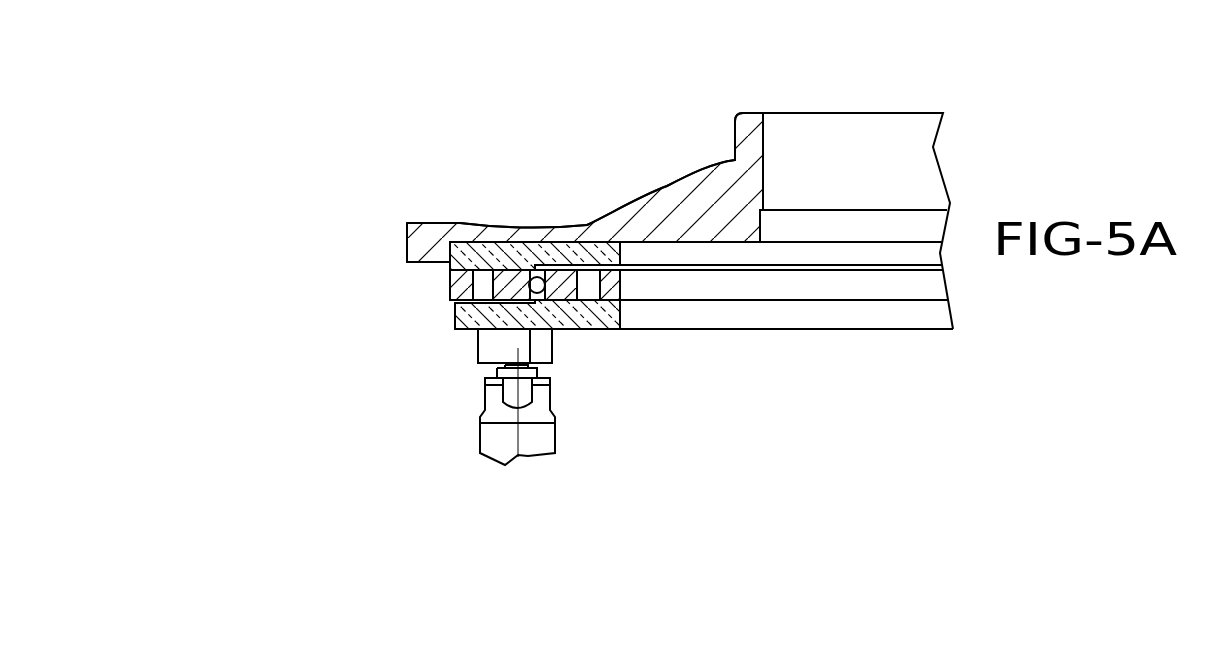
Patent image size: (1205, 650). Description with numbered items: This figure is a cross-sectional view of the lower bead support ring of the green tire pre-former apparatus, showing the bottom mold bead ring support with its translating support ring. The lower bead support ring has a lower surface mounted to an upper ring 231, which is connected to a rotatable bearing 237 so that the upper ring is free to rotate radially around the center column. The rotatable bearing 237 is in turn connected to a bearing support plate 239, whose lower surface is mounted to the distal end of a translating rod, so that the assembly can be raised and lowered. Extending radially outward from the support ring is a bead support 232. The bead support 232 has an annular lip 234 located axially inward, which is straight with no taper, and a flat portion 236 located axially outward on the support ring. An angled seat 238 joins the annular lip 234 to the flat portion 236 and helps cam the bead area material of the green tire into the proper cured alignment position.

The upper ring 231 is at (487, 253).
The bead support 232 is at (488, 141).
The annular lip 234 is at (750, 111).
The flat portion 236 is at (453, 223).
The rotatable bearing 237 is at (613, 285).
The angled seat 238 is at (663, 187).
The bearing support plate 239 is at (478, 318).